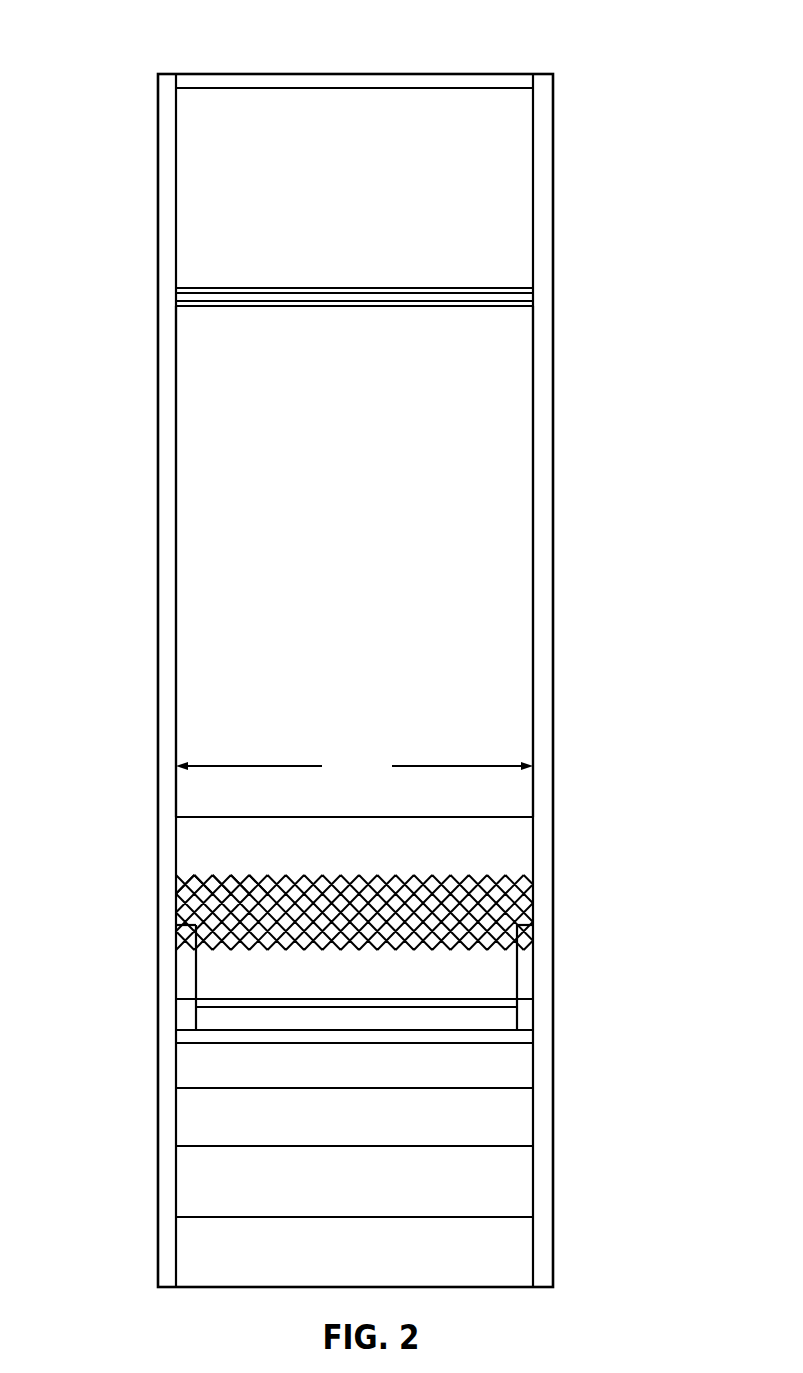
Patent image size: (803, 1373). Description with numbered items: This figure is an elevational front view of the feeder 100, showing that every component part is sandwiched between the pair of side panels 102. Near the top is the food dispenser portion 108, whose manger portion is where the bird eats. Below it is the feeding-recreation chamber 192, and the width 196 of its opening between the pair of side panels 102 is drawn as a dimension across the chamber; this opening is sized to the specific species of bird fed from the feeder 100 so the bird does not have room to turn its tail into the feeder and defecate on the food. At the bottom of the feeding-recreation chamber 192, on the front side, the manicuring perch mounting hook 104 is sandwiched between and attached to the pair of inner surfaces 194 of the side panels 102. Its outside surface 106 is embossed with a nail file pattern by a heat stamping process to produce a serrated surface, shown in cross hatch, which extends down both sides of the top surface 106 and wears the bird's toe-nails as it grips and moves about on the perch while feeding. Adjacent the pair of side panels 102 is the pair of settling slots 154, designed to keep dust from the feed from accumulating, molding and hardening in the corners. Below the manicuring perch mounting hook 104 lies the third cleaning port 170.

The feeder 100 is at (272, 62).
The food dispenser portion 108 is at (392, 74).
The side panels 102 is at (158, 482).
The inner surfaces 194 is at (178, 611).
The feeding-recreation chamber 192 is at (338, 588).
The width of the opening 196 is at (354, 767).
The manicuring perch mounting hook 104 is at (489, 875).
The outside surface 106 is at (268, 902).
The settling slots 154 is at (187, 1009).
The third cleaning port 170 is at (485, 1040).